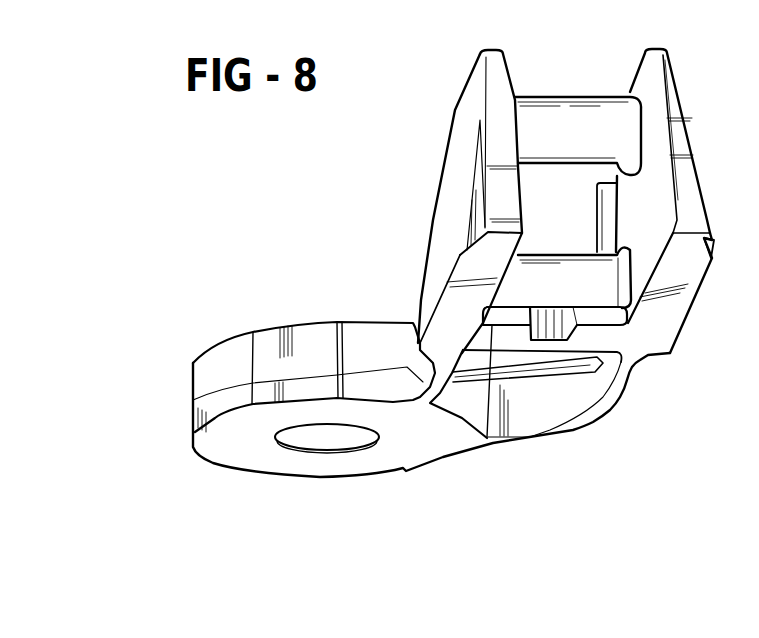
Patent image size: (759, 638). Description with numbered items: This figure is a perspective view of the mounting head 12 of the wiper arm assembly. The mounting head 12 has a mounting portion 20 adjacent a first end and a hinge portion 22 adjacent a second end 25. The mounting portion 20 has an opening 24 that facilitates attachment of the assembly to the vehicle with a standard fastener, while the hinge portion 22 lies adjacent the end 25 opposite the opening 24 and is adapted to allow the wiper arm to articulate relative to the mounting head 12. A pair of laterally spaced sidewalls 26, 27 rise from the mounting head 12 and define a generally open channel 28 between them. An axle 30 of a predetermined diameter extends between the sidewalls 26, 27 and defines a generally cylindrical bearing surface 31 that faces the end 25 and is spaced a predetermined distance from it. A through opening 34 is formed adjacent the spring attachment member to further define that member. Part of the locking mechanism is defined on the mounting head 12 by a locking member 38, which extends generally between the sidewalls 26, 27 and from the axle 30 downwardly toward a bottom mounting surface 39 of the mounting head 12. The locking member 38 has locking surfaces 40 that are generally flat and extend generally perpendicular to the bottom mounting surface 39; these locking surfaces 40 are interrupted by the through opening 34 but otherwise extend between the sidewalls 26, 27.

The mounting head 12 is at (367, 338).
The mounting portion 20 is at (202, 380).
The hinge portion 22 is at (455, 128).
The opening 24 is at (333, 438).
The second end 25 is at (690, 197).
The sidewall 26 is at (693, 129).
The sidewall 27 is at (450, 207).
The open channel 28 is at (546, 31).
The axle 30 is at (562, 96).
The bearing surface 31 is at (585, 129).
The through opening 34 is at (543, 327).
The locking member 38 is at (500, 315).
The bottom mounting surface 39 is at (681, 267).
The locking surfaces 40 is at (615, 316).